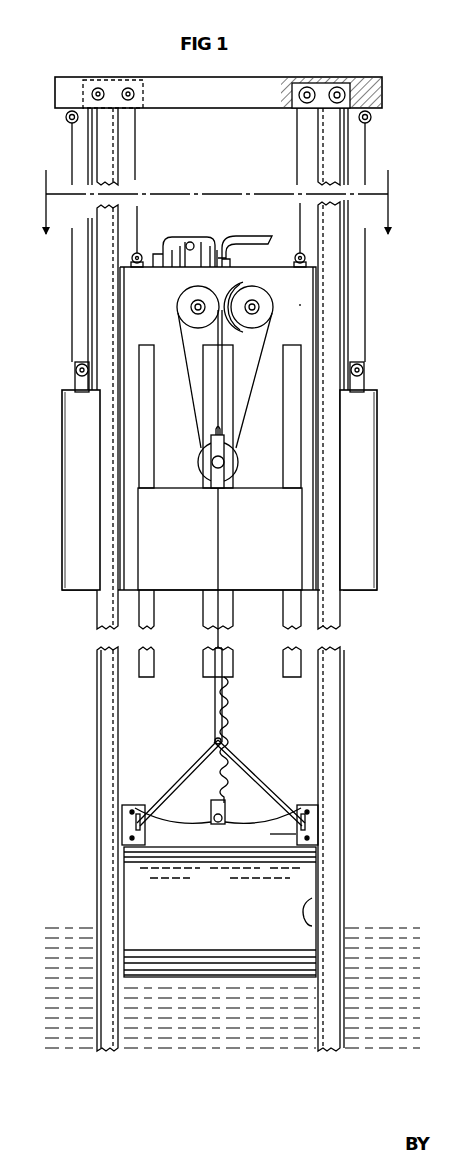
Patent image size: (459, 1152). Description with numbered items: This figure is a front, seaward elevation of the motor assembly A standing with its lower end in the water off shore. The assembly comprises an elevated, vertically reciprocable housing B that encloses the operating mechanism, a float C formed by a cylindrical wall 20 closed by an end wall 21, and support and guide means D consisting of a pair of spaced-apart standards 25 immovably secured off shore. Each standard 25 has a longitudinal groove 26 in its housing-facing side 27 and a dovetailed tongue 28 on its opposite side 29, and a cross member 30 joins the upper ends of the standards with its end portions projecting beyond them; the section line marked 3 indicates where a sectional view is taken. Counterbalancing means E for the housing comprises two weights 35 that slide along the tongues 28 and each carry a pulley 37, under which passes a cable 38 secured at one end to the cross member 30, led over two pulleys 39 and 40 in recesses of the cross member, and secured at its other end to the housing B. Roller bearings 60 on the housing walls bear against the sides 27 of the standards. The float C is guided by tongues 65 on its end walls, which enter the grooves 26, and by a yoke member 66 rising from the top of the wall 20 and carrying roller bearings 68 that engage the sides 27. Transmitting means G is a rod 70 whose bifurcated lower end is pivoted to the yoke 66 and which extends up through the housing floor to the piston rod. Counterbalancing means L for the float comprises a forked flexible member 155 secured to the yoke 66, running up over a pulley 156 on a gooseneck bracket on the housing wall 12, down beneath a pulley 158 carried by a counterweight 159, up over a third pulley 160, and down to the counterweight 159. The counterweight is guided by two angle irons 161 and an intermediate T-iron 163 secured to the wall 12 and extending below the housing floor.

The motor assembly A is at (92, 54).
The section line 3- 3 is at (214, 189).
The wall 12 is at (300, 304).
The cylindrical wall 20 is at (300, 897).
The end wall 21 is at (312, 910).
The standards 25 is at (105, 250).
The groove 26 is at (325, 803).
The housing and float facing side 27 is at (122, 147).
The tongue 28 is at (345, 655).
The opposite side 29 is at (345, 670).
The cross member 30 is at (205, 103).
The weights 35 is at (70, 469).
The pulley 37 is at (74, 373).
The cable 38 is at (139, 225).
The pulley 39 is at (82, 80).
The pulley 40 is at (143, 77).
The roller bearings 60 is at (120, 297).
The tongues 65 is at (124, 871).
The yoke member 66 is at (283, 834).
The roller bearings 68 is at (124, 830).
The rod 70 is at (218, 788).
The forked flexible member 155 is at (190, 389).
The pulley 156 is at (260, 294).
The pulley 158 is at (232, 465).
The counterweight 159 is at (247, 504).
The third pulley 160 is at (192, 298).
The angle irons 161 is at (147, 423).
The T-iron 163 is at (232, 655).
The housing B is at (421, 293).
The float C is at (303, 880).
The support and guide means D is at (346, 760).
The counterbalancing means E is at (62, 523).
The motion transmitting means G is at (231, 713).
The counterbalancing means L is at (277, 325).